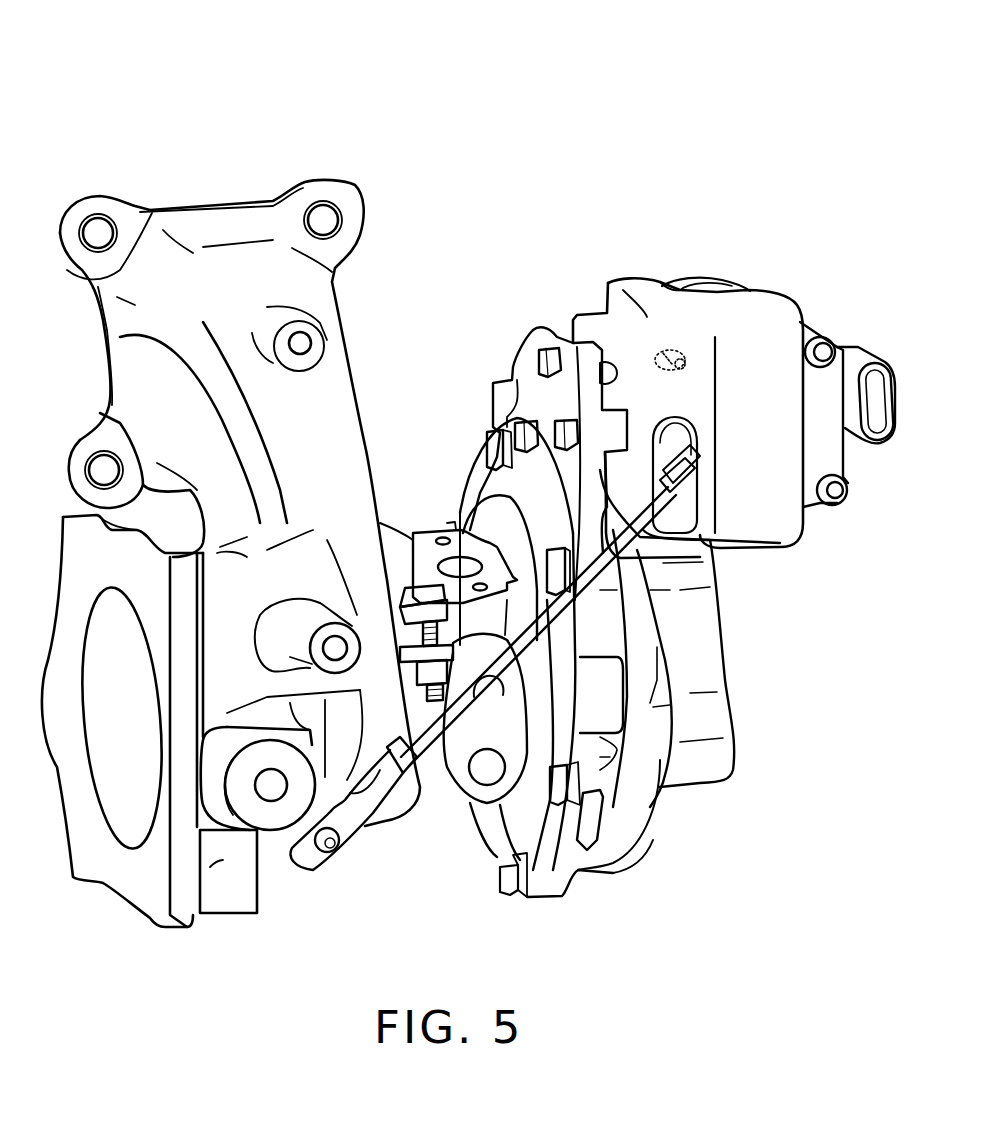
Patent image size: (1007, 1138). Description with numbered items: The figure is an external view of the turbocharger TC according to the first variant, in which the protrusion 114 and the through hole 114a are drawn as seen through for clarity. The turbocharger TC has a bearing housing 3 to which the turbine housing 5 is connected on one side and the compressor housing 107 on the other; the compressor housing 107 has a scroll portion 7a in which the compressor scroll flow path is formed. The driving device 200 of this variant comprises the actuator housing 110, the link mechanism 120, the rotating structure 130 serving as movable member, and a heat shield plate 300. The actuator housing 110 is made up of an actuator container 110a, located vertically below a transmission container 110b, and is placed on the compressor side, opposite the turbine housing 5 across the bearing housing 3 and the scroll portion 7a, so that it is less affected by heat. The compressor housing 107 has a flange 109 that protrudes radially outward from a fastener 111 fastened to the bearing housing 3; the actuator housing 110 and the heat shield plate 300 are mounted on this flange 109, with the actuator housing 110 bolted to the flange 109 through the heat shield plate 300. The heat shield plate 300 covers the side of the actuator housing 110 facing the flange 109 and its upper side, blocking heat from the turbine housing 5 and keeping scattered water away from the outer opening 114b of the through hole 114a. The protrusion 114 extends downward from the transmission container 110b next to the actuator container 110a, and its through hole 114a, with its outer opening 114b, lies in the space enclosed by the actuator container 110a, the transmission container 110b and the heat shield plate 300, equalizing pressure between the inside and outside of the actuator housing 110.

The turbocharger TC is at (168, 80).
The driving device 200 is at (702, 153).
The heat shield plate 300 is at (761, 333).
The actuator housing 110 is at (845, 452).
The actuator container 110a is at (683, 315).
The transmission container 110b is at (819, 338).
The flange 109 is at (573, 357).
The protrusion 114 is at (680, 350).
The through hole 114a is at (687, 358).
The outer opening 114b is at (657, 357).
The turbine housing 5 is at (367, 485).
The bearing housing 3 is at (430, 528).
The scroll portion 7a is at (643, 773).
The compressor housing 107 is at (607, 868).
The fastener 111 is at (532, 893).
The link mechanism 120 is at (360, 878).
The rotating structure 130 is at (275, 812).